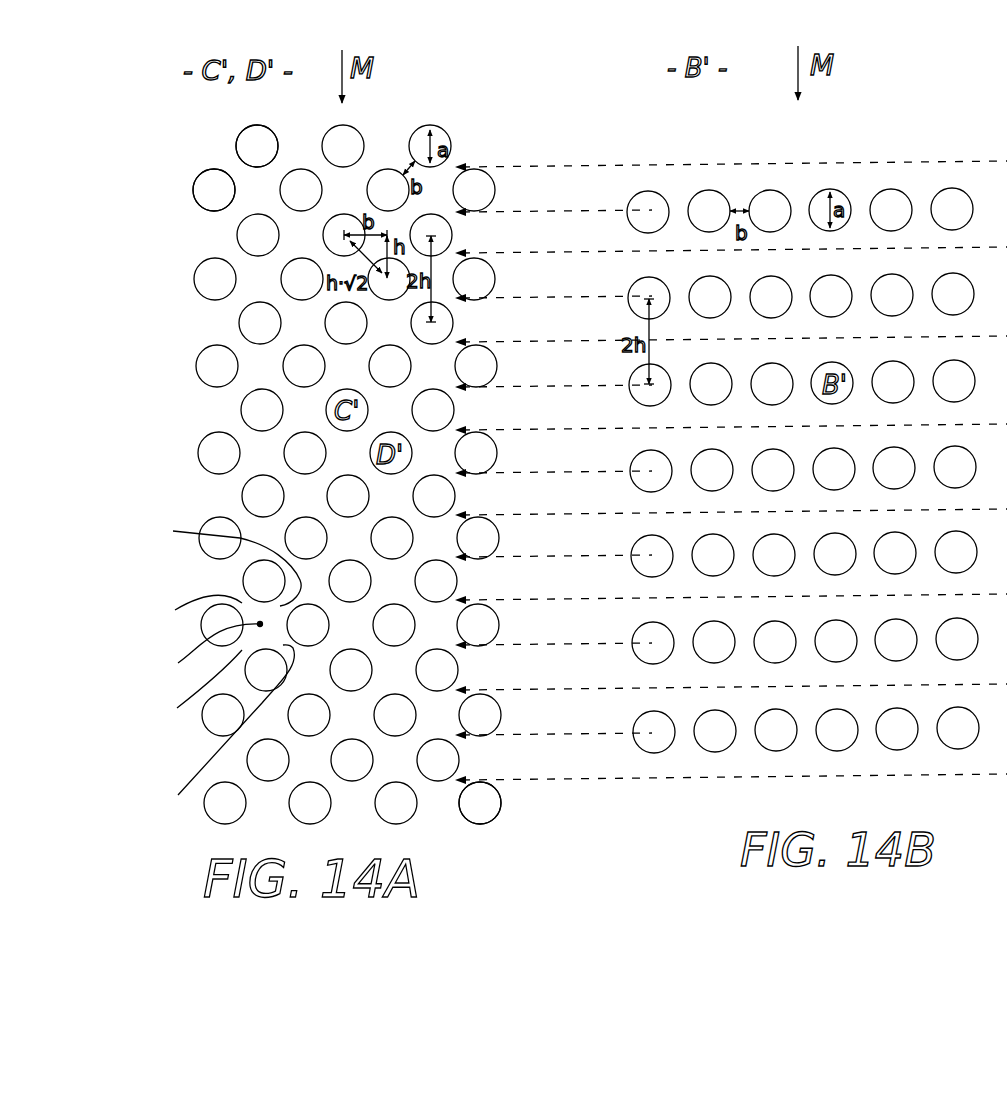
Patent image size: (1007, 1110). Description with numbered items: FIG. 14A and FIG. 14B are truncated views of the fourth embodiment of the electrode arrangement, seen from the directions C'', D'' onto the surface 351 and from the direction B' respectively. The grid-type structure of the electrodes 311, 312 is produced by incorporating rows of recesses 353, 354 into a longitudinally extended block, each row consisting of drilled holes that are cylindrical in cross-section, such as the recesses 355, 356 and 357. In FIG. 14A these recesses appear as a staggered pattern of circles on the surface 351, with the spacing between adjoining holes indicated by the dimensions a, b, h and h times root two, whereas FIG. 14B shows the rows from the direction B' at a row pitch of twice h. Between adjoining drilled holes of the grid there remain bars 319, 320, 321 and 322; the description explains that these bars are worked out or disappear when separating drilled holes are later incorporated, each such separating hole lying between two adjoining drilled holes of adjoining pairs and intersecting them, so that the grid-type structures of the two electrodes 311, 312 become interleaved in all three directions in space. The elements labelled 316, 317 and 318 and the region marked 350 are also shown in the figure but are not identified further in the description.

In FIG. 14A, the electrode 311 is at (439, 798).
In FIG. 14A, the electrode 312 is at (507, 822).
In FIG. 14A, the flow direction 316 is at (210, 578).
In FIG. 14A, the flow arrow 317 is at (218, 688).
In FIG. 14A, the stagnation point 318 is at (198, 648).
In FIG. 14A, the bar 319 is at (188, 609).
In FIG. 14A, the bar 320 is at (217, 563).
In FIG. 14A, the bar 321 is at (188, 684).
In FIG. 14A, the bar 322 is at (214, 728).
In FIG. 14A, the perforated plate section 350 is at (422, 121).
In FIG. 14A, the surface 351 is at (186, 363).
In FIG. 14A, the row of recesses 353 is at (189, 189).
In FIG. 14A, the row of recesses 354 is at (232, 147).
In FIG. 14A, the recess 355 is at (215, 210).
In FIG. 14A, the recess 356 is at (268, 138).
In FIG. 14B, the recess 357 is at (954, 190).